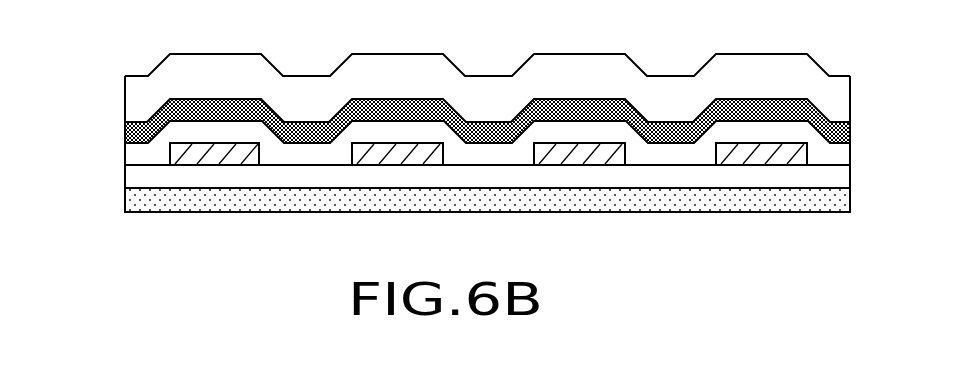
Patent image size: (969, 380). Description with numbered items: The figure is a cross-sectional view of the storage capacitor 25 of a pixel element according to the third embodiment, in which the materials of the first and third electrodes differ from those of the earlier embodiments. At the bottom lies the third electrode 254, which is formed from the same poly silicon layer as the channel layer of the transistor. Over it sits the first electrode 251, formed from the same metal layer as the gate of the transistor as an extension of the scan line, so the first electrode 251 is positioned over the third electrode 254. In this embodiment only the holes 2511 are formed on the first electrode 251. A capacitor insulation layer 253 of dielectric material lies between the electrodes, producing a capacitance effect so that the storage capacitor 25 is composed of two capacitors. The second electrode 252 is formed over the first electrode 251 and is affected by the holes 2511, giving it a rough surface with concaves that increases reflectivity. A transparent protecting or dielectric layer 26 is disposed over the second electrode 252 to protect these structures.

The storage capacitor 25 is at (50, 127).
The dielectric layer 26 is at (137, 92).
The first electrode 251 is at (175, 155).
The holes 2511 is at (303, 146).
The second electrode 252 is at (130, 128).
The capacitor insulation layer 253 is at (137, 161).
The third electrode 254 is at (135, 202).